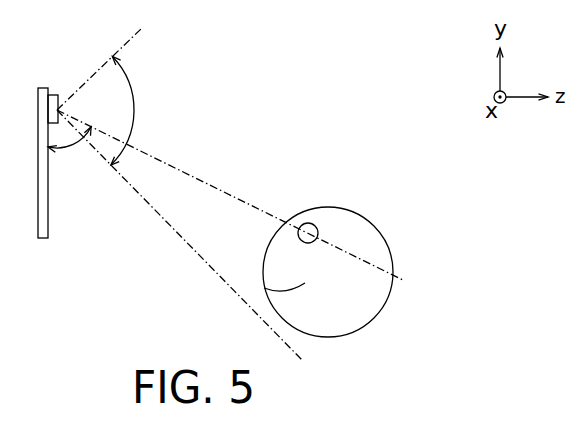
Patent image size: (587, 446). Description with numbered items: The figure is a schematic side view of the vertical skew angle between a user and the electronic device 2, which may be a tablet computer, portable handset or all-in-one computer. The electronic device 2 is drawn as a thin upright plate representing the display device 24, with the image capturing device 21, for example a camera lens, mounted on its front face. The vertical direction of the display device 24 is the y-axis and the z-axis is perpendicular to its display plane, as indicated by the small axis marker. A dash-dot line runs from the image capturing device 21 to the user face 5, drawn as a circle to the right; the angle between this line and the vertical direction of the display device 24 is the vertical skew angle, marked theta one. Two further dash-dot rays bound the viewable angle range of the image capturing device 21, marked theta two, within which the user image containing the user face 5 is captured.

The electronic device 2 is at (66, 169).
The user face 5 is at (333, 212).
The image capturing device 21 is at (52, 94).
The display device 24 is at (48, 218).